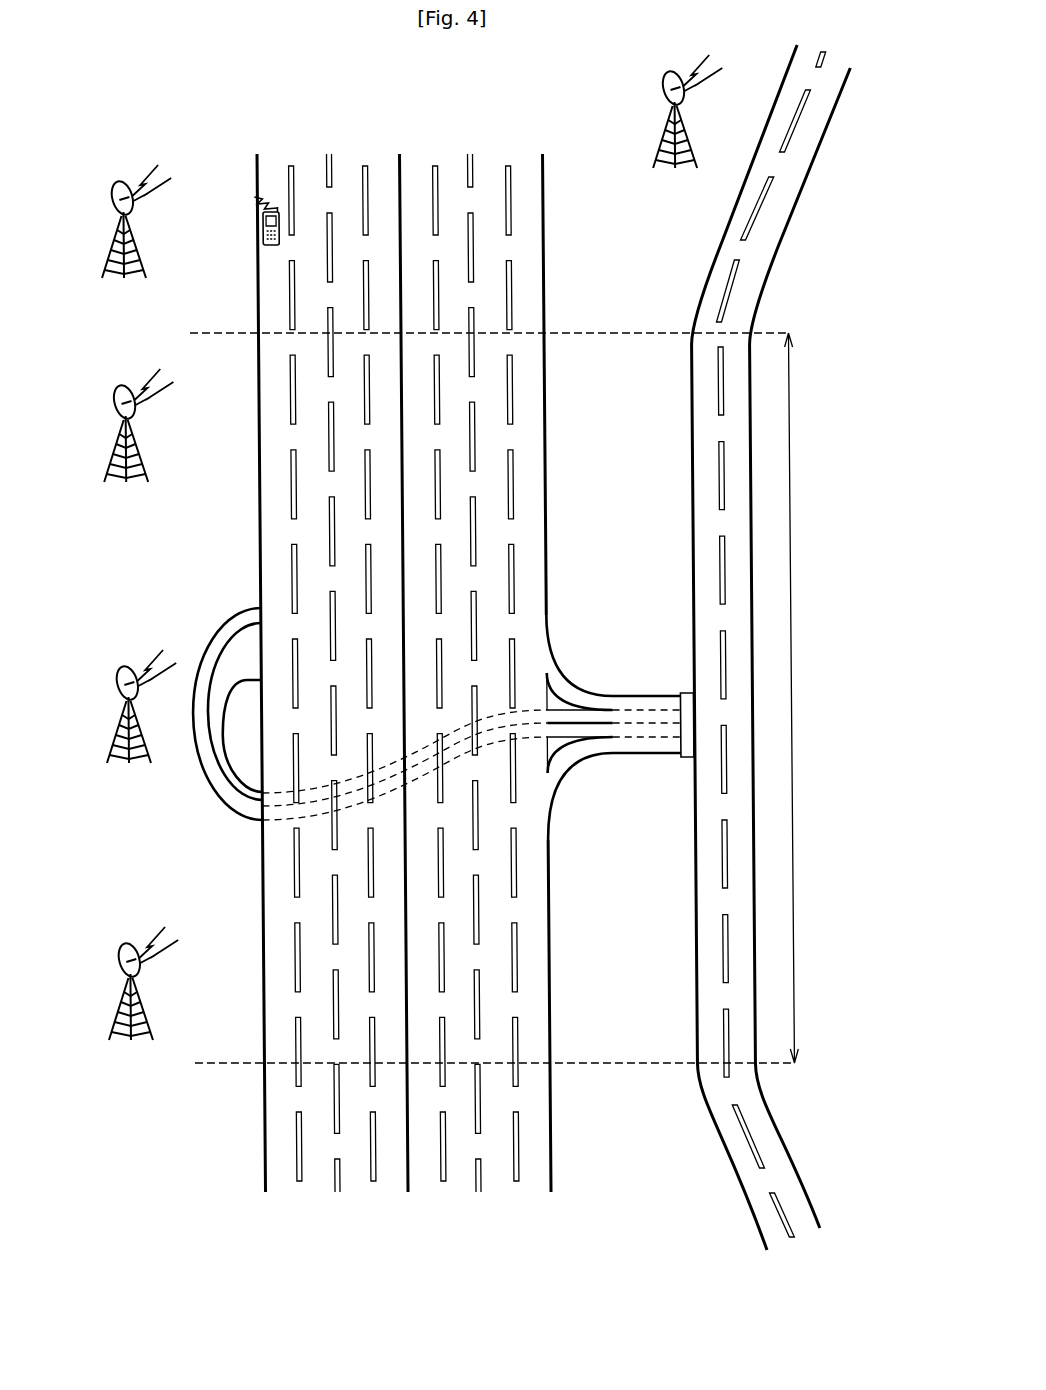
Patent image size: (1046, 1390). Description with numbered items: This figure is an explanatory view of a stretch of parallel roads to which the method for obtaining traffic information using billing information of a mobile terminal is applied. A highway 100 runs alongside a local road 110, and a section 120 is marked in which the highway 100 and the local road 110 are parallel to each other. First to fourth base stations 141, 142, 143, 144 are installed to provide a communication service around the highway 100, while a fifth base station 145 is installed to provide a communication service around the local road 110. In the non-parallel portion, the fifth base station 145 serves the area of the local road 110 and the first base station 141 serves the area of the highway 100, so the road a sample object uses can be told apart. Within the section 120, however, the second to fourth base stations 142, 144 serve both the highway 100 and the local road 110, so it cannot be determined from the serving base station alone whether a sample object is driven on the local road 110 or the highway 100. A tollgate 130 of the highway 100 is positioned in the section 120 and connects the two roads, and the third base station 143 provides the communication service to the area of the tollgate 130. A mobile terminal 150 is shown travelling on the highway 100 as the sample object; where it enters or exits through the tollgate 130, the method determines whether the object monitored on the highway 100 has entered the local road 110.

The highway 100 is at (526, 141).
The local road 110 is at (797, 178).
The section 120 is at (523, 698).
The tollgate 130 is at (683, 692).
The first base station 141 is at (110, 244).
The second base station 142 is at (110, 448).
The third base station 143 is at (111, 729).
The fourth base station 144 is at (111, 1006).
The fifth base station 145 is at (662, 137).
The mobile terminal 150 is at (262, 229).